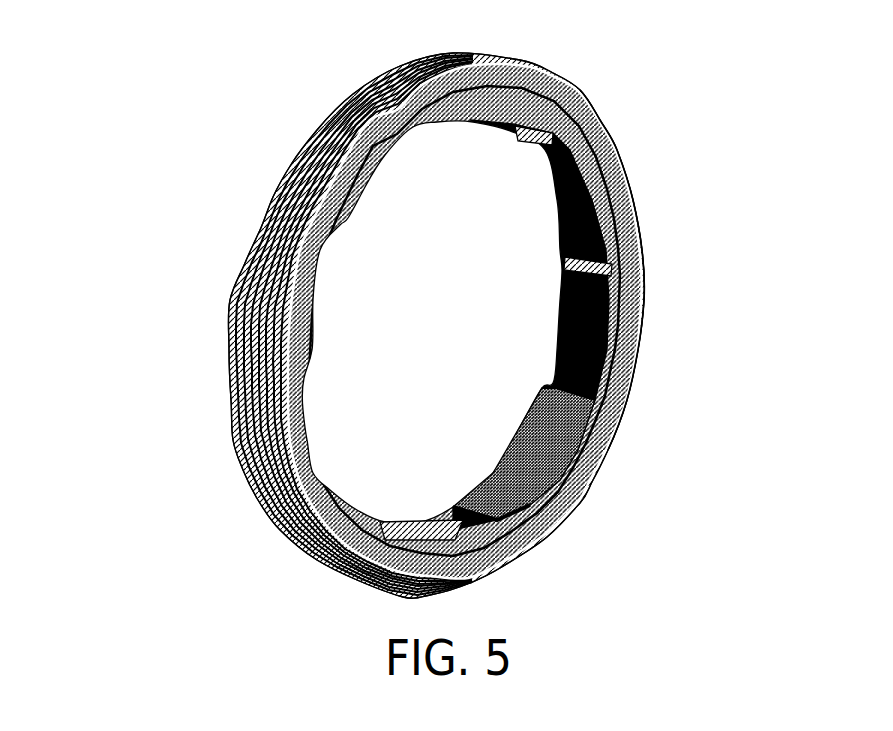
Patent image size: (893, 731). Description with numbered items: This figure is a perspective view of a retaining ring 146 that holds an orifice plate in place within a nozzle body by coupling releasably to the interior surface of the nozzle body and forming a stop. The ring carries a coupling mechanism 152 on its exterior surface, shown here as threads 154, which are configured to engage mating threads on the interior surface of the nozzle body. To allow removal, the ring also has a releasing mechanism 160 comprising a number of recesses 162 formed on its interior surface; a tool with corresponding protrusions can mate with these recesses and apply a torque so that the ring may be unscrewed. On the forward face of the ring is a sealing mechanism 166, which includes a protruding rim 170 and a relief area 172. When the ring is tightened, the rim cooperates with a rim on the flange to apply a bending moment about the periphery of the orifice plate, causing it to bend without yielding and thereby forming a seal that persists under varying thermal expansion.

The retaining ring 146 is at (411, 306).
The coupling mechanism 152 is at (304, 325).
The threads 154 is at (265, 453).
The releasing mechanism 160 is at (516, 411).
The recesses 162 is at (550, 402).
The sealing mechanism 166 is at (692, 193).
The protruding rim 170 is at (623, 203).
The relief area 172 is at (615, 312).